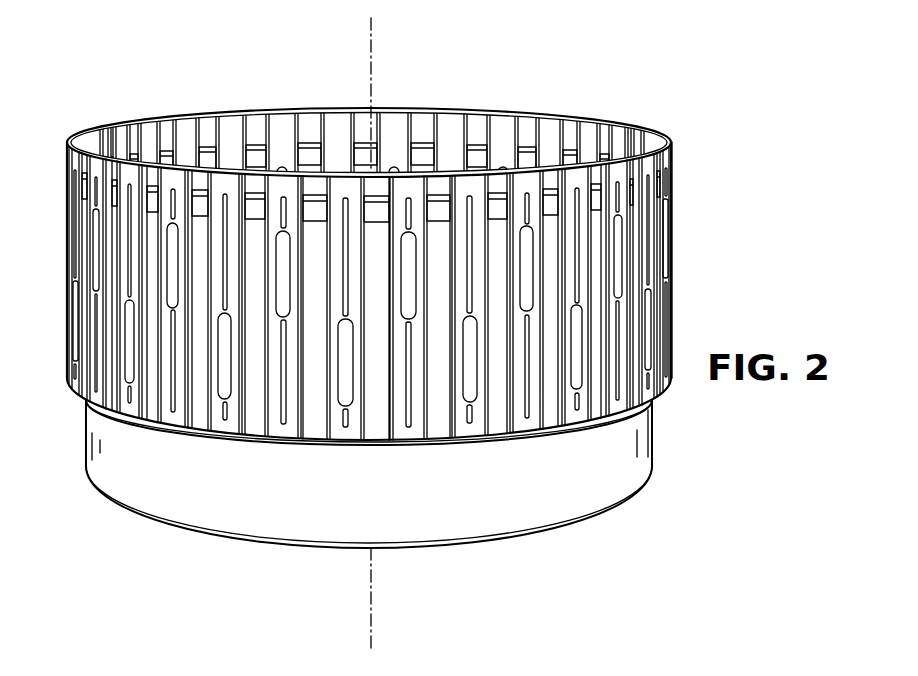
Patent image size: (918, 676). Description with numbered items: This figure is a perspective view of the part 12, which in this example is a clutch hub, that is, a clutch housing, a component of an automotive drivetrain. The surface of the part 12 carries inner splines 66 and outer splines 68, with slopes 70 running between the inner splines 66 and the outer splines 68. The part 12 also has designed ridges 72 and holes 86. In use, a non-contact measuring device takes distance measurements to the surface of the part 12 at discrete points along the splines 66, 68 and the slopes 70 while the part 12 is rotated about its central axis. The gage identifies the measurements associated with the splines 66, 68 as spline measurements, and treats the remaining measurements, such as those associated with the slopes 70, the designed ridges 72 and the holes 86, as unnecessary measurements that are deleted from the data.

The part 12 is at (413, 325).
The inner splines 66 is at (373, 430).
The outer splines 68 is at (413, 393).
The slopes 70 is at (390, 393).
The designed ridges 72 is at (410, 403).
The holes 86 is at (172, 224).